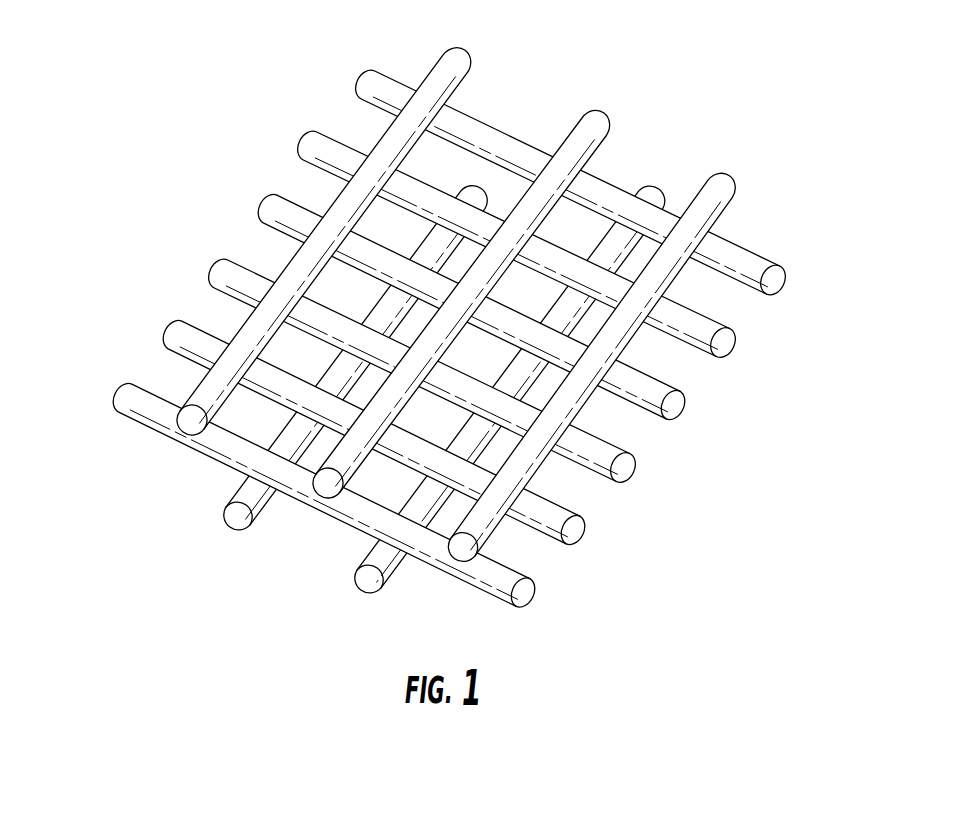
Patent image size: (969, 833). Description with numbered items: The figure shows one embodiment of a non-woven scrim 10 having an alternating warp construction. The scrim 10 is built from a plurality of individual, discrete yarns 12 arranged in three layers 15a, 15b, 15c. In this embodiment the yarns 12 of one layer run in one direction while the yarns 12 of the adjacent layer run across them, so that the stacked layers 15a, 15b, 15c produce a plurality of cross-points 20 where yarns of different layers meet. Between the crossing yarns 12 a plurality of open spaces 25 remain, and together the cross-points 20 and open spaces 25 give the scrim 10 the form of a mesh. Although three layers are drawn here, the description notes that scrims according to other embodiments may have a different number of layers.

The scrim 10 is at (430, 324).
The yarns 12 is at (497, 398).
The first layer 15a is at (456, 334).
The second layer 15b is at (430, 338).
The third layer 15c is at (238, 520).
The cross-points 20 is at (617, 270).
The open spaces 25 is at (445, 160).